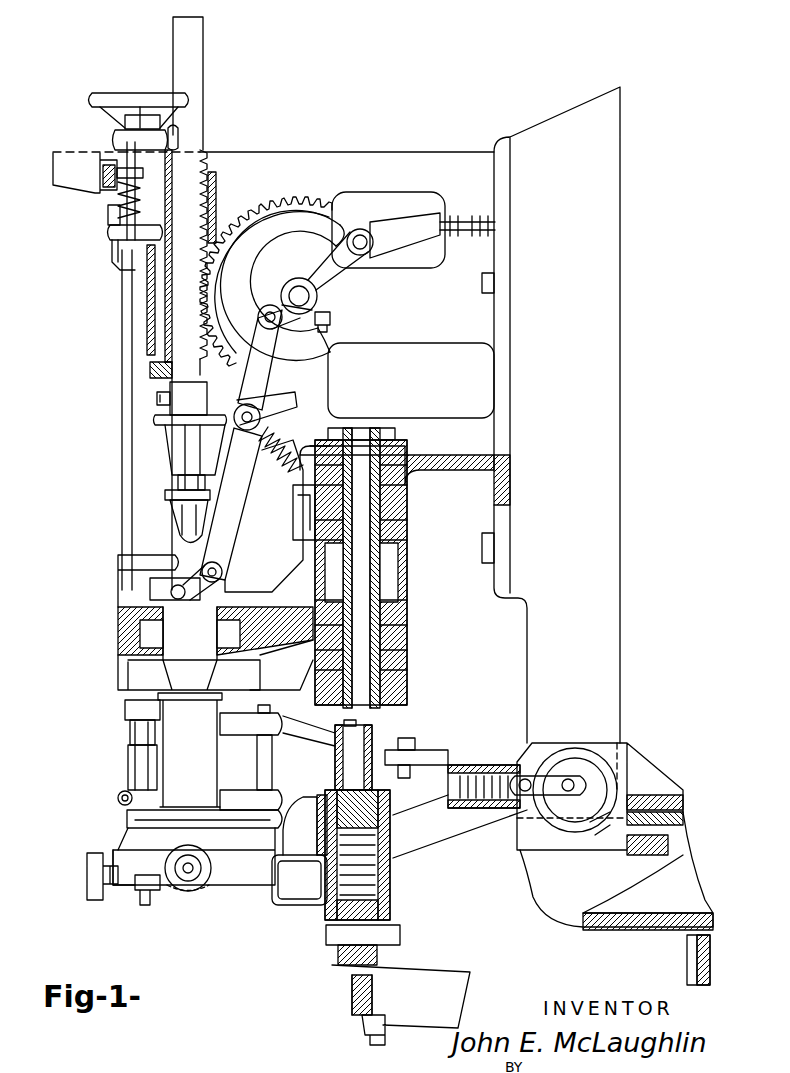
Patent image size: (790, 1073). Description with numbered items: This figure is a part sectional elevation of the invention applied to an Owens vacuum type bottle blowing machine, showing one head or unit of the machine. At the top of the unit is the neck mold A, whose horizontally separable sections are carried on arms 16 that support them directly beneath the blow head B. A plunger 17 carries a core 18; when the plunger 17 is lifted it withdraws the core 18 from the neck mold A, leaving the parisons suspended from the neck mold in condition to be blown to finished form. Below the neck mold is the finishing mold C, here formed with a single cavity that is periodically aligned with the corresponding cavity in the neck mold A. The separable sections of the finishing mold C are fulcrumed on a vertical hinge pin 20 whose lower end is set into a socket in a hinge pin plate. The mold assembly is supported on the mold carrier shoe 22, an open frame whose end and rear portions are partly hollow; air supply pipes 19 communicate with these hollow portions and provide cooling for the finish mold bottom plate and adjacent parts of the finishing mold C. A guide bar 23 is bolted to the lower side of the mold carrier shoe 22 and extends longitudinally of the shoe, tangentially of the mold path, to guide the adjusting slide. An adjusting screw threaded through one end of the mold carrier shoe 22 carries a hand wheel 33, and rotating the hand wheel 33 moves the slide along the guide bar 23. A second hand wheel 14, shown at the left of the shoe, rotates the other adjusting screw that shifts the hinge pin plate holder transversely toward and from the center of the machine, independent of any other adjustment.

The plunger 17 is at (180, 487).
The core 18 is at (187, 525).
The blow head B is at (118, 640).
The neck mold A is at (125, 681).
The finishing mold C is at (160, 716).
The arms 16 is at (268, 660).
The vertical hinge pin 20 is at (270, 768).
The mold carrier shoe 22 is at (115, 862).
The guide bar 23 is at (160, 885).
The hand wheel 33 is at (206, 866).
The hand knob 14 is at (90, 886).
The air supply pipes 19 is at (300, 882).